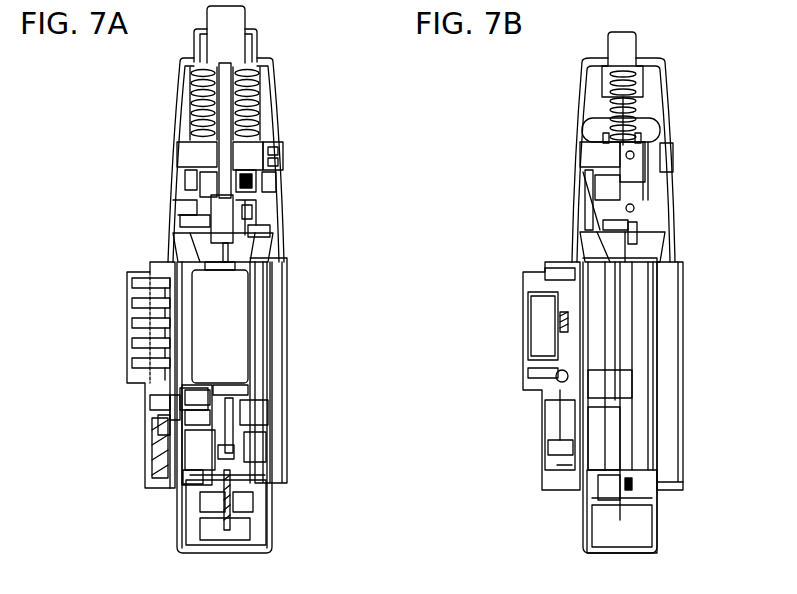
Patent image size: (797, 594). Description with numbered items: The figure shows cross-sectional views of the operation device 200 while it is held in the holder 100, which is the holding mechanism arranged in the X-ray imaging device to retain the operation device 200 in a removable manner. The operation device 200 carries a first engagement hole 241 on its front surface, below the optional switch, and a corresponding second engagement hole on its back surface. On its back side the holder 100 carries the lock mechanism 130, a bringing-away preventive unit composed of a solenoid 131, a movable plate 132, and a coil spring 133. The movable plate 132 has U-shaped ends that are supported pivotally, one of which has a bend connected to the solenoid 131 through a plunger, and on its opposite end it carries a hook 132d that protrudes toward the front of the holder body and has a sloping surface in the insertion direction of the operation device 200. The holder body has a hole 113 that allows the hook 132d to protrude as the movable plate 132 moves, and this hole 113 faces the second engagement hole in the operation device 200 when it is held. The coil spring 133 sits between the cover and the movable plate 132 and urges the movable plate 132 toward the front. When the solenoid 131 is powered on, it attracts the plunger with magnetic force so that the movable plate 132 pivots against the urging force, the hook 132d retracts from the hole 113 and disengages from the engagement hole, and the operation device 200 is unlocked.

In FIG. 7A, the operation device 200 is at (174, 143).
In FIG. 7B, the operation device 200 is at (573, 142).
In FIG. 7A, the holder 100 is at (126, 301).
In FIG. 7B, the holder 100 is at (684, 344).
In FIG. 7A, the lock mechanism 130 is at (385, 298).
In FIG. 7B, the solenoid 131 is at (520, 327).
In FIG. 7A, the movable plate 132 is at (182, 393).
In FIG. 7A, the hook 132d is at (158, 423).
In FIG. 7A, the coil spring 133 is at (178, 482).
In FIG. 7A, the hole 113 is at (173, 410).
In FIG. 7A, the first engagement hole 241 is at (228, 455).